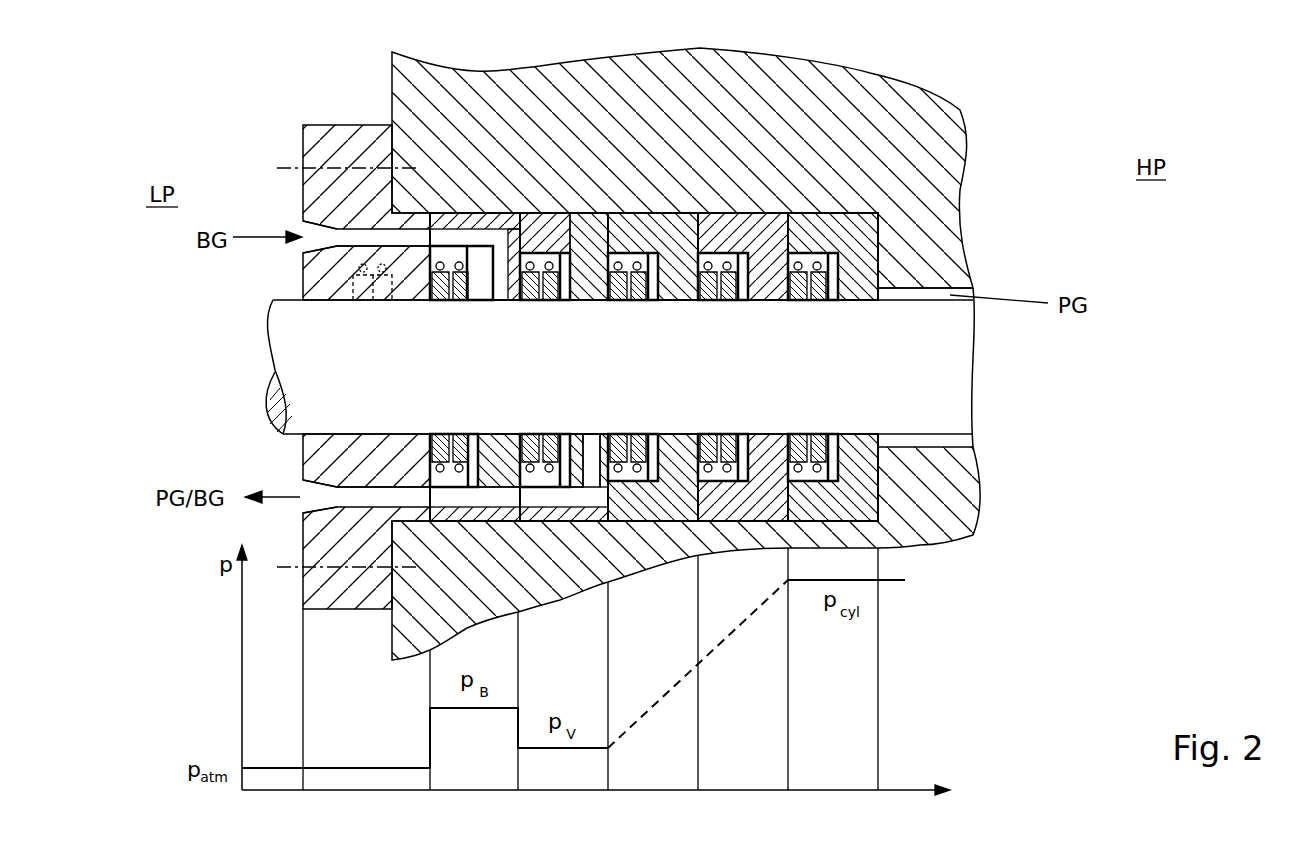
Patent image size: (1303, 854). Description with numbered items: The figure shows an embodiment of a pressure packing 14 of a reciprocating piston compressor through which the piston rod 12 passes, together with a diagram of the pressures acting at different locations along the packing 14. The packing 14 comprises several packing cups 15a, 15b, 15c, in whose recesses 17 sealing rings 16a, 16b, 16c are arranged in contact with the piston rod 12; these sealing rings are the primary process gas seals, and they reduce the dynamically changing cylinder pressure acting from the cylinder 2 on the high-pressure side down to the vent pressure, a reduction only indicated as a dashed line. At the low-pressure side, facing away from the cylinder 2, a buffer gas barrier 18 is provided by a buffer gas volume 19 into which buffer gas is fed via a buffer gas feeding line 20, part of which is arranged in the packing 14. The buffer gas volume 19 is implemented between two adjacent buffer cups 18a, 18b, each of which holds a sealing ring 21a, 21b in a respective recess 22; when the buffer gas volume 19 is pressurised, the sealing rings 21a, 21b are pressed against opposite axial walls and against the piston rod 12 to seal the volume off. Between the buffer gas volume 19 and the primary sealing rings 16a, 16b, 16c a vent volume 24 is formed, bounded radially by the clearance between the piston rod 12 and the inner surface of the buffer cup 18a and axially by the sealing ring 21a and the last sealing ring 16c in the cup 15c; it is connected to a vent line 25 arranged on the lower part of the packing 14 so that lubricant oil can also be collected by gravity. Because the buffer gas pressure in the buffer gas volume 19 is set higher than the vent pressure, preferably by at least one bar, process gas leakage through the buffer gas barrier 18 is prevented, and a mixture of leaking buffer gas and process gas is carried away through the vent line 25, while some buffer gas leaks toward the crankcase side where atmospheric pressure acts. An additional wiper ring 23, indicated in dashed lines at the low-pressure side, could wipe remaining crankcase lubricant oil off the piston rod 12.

The cylinder 2 is at (1162, 400).
The piston rod 12 is at (900, 357).
The pressure packing 14 is at (337, 158).
The packing cup 15a is at (855, 490).
The packing cup 15b is at (700, 495).
The packing cup 15c is at (675, 255).
The sealing ring 16a is at (827, 288).
The sealing ring 16b is at (800, 225).
The sealing ring 16c is at (635, 270).
The recess 17 is at (635, 250).
The buffer gas barrier 18 is at (484, 219).
The buffer cup 18a is at (565, 235).
The buffer cup 18b is at (452, 222).
The buffer gas volume 19 is at (475, 312).
The buffer gas feeding line 20 is at (317, 233).
The sealing ring 21a is at (575, 250).
The sealing ring 21b is at (472, 305).
The recess 22 is at (462, 262).
The wiper ring 23 is at (353, 287).
The vent volume 24 is at (578, 435).
The vent line 25 is at (318, 497).